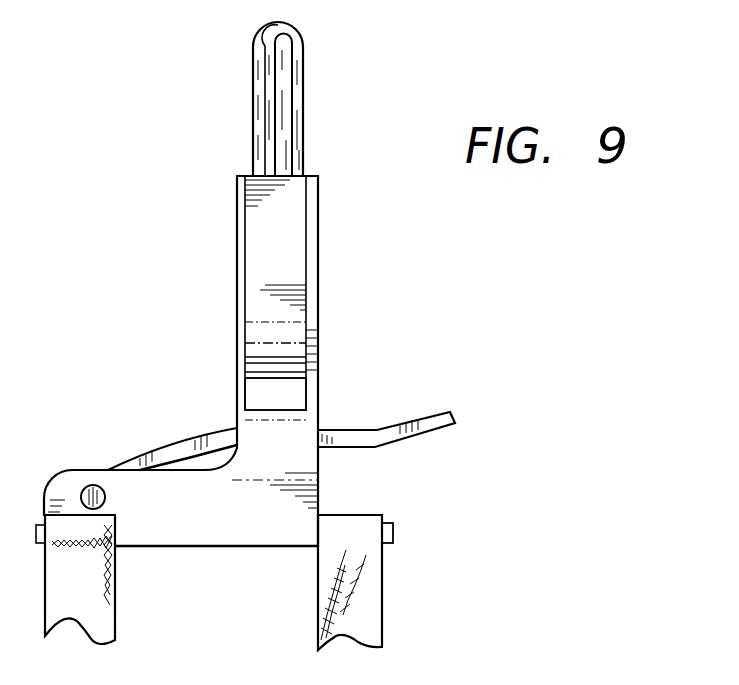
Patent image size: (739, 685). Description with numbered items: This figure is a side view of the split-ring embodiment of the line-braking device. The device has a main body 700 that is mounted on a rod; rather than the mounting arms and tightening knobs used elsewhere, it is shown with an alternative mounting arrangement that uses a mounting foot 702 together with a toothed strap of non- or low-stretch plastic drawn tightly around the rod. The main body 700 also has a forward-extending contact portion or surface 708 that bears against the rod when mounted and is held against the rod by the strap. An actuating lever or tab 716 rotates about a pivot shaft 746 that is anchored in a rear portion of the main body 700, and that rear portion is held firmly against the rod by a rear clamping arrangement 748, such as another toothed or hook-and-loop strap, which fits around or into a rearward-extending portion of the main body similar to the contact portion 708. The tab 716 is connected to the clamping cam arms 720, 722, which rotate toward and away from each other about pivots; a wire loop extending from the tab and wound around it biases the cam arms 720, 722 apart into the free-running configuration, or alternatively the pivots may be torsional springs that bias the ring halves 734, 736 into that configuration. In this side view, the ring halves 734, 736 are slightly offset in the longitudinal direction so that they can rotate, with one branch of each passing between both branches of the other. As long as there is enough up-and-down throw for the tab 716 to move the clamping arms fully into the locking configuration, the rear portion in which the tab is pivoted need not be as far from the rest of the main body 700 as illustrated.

The main body 700 is at (162, 527).
The mounting foot 702 is at (358, 618).
The contact portion or surface 708 is at (397, 525).
The actuating lever or tab 716 is at (430, 413).
The clamping cam arm 720 is at (272, 223).
The clamping cam arm 722 is at (287, 248).
The ring half 734 is at (251, 125).
The ring half 736 is at (298, 118).
The pivot shaft 746 is at (96, 486).
The rear clamping arrangement 748 is at (97, 595).